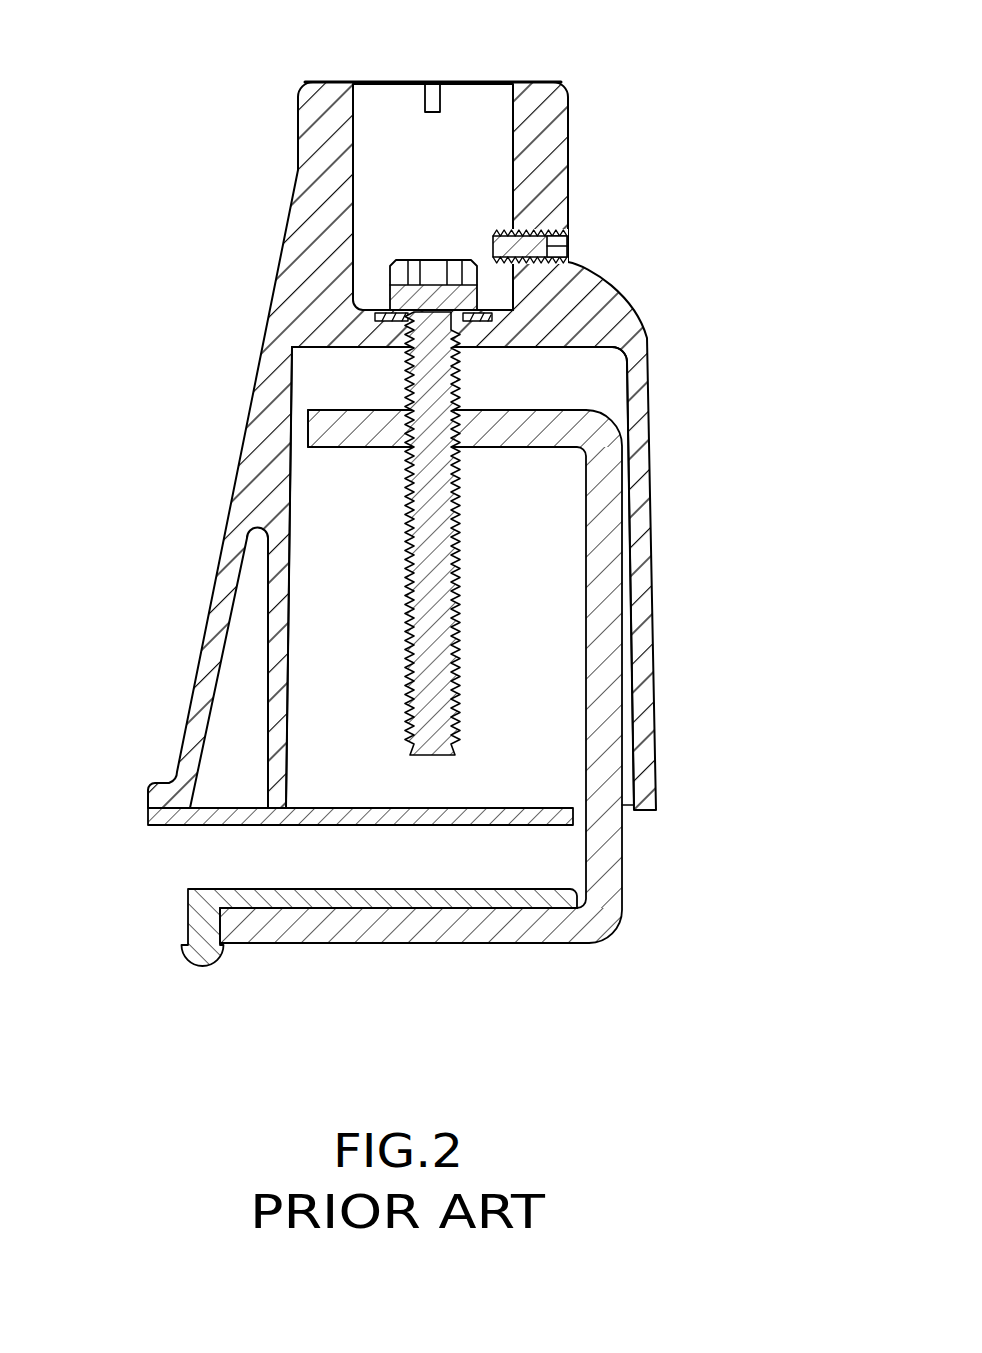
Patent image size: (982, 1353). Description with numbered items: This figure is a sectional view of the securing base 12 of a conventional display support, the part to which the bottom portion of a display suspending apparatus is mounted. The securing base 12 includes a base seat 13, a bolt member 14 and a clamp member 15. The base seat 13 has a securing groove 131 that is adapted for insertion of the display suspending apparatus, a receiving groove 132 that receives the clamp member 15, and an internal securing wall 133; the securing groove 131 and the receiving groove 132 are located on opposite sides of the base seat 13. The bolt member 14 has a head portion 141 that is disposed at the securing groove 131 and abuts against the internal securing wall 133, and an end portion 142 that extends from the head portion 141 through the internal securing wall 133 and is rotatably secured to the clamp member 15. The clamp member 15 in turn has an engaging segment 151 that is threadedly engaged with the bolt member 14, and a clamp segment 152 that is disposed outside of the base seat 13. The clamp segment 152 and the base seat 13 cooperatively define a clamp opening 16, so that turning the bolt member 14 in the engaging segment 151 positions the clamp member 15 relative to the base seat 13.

The securing base 12 is at (425, 446).
The base seat 13 is at (550, 133).
The securing groove 131 is at (477, 117).
The receiving groove 132 is at (588, 377).
The internal securing wall 133 is at (378, 339).
The bolt member 14 is at (497, 472).
The head portion 141 is at (403, 263).
The end portion 142 is at (432, 533).
The clamp member 15 is at (480, 733).
The engaging segment 151 is at (522, 440).
The clamp segment 152 is at (499, 937).
The clamp opening 16 is at (205, 861).